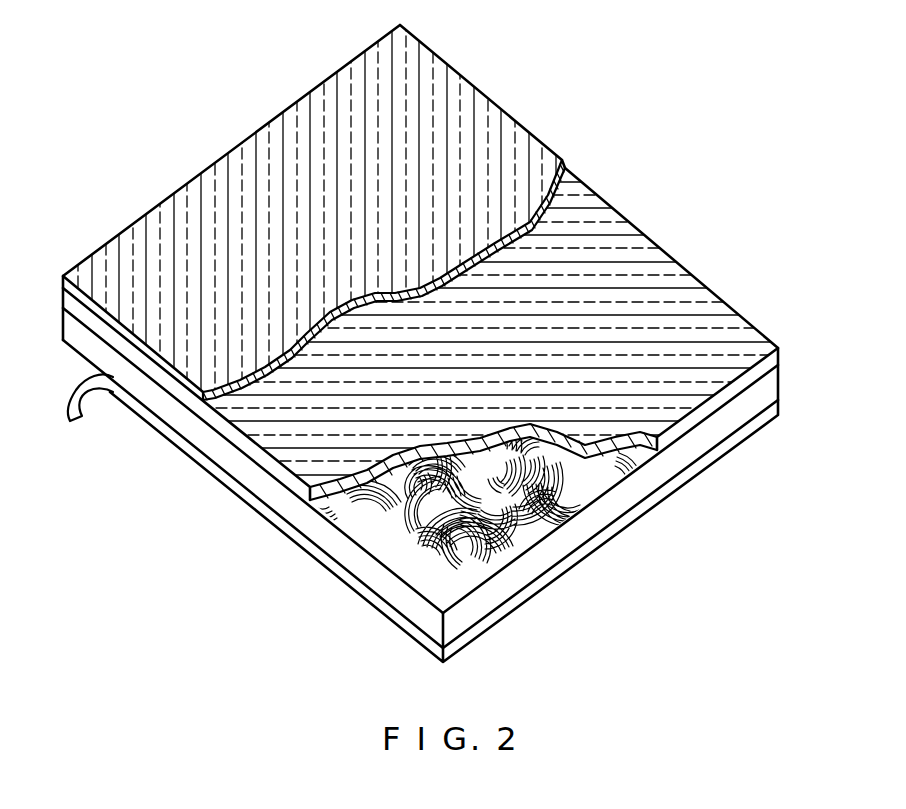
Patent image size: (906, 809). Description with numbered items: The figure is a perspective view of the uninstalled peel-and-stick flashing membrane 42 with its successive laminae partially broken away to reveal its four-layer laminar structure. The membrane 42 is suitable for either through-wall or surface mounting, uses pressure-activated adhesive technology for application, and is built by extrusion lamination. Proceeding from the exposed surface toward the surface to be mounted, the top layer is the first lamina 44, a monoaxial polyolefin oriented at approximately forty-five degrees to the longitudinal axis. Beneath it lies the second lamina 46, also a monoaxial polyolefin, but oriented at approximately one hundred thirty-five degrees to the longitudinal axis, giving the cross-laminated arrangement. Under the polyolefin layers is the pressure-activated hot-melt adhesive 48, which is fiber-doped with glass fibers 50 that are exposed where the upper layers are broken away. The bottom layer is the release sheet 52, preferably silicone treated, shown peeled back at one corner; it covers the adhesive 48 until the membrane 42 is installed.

The peel-and-stick flashing membrane 42 is at (638, 212).
The first lamina 44 is at (537, 137).
The second lamina 46 is at (723, 338).
The pressure-activated hot-melt adhesive 48 is at (352, 558).
The glass fibers 50 is at (565, 513).
The release sheet 52 is at (90, 402).